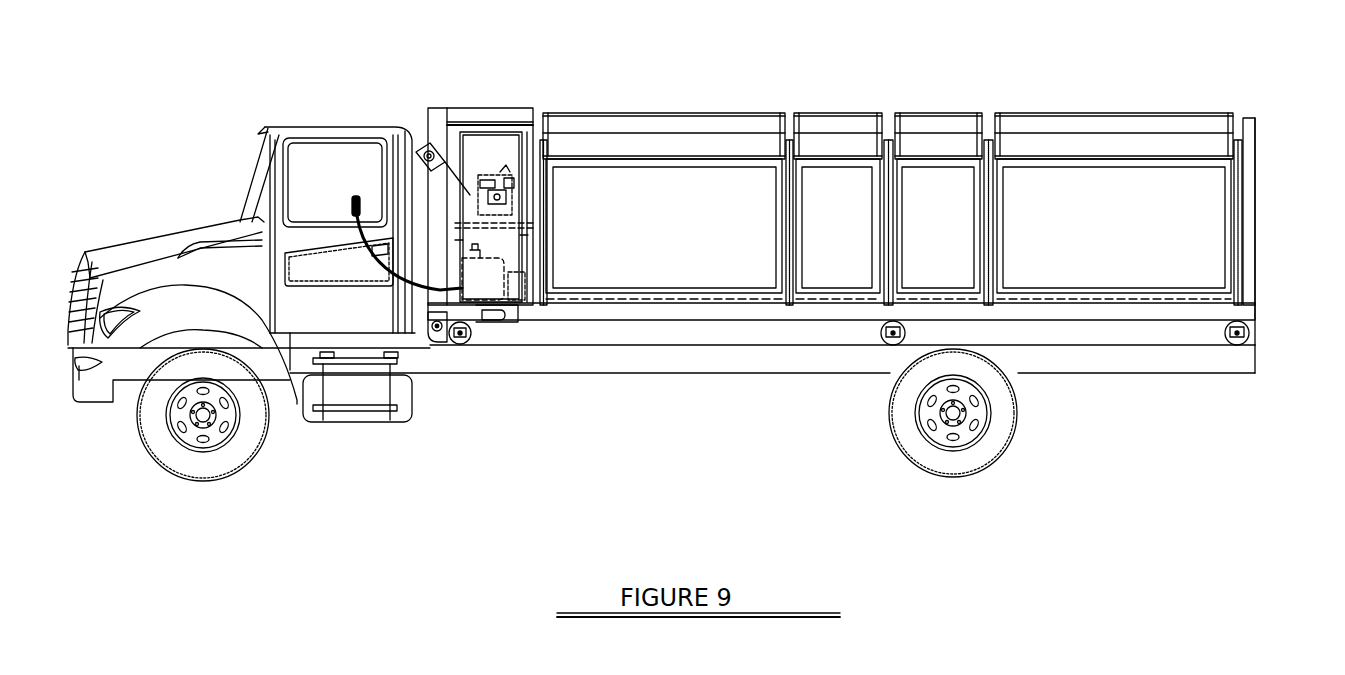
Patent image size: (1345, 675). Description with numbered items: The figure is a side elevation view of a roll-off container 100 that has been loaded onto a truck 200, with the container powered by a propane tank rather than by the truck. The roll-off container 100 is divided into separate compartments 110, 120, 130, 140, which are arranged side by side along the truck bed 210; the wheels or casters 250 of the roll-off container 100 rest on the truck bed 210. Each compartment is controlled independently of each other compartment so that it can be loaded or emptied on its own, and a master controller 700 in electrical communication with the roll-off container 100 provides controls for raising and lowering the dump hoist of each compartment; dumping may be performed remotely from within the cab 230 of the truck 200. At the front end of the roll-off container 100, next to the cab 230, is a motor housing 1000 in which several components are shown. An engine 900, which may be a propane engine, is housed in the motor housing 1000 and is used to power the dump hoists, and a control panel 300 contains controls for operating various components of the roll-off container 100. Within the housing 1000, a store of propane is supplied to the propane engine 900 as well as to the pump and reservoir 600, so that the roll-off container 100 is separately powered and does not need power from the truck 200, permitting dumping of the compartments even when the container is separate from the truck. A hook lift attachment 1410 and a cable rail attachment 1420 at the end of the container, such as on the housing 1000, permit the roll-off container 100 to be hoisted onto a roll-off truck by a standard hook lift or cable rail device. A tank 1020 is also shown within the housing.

The roll-off container 100 is at (1252, 88).
The compartment 110 is at (623, 146).
The compartment 120 is at (838, 145).
The compartment 130 is at (931, 145).
The compartment 140 is at (1077, 145).
The truck 200 is at (136, 221).
The truck bed 210 is at (1077, 313).
The cab 230 is at (335, 182).
The wheels or casters 250 is at (893, 346).
The control panel 300 is at (517, 237).
The pump and reservoir 600 is at (518, 362).
The master controller 700 is at (353, 198).
The engine 900 is at (470, 204).
The motor housing 1000 is at (488, 142).
The storage tank 1020 is at (478, 272).
The hook lift attachment 1410 is at (422, 146).
The cable rail attachment 1420 is at (502, 322).